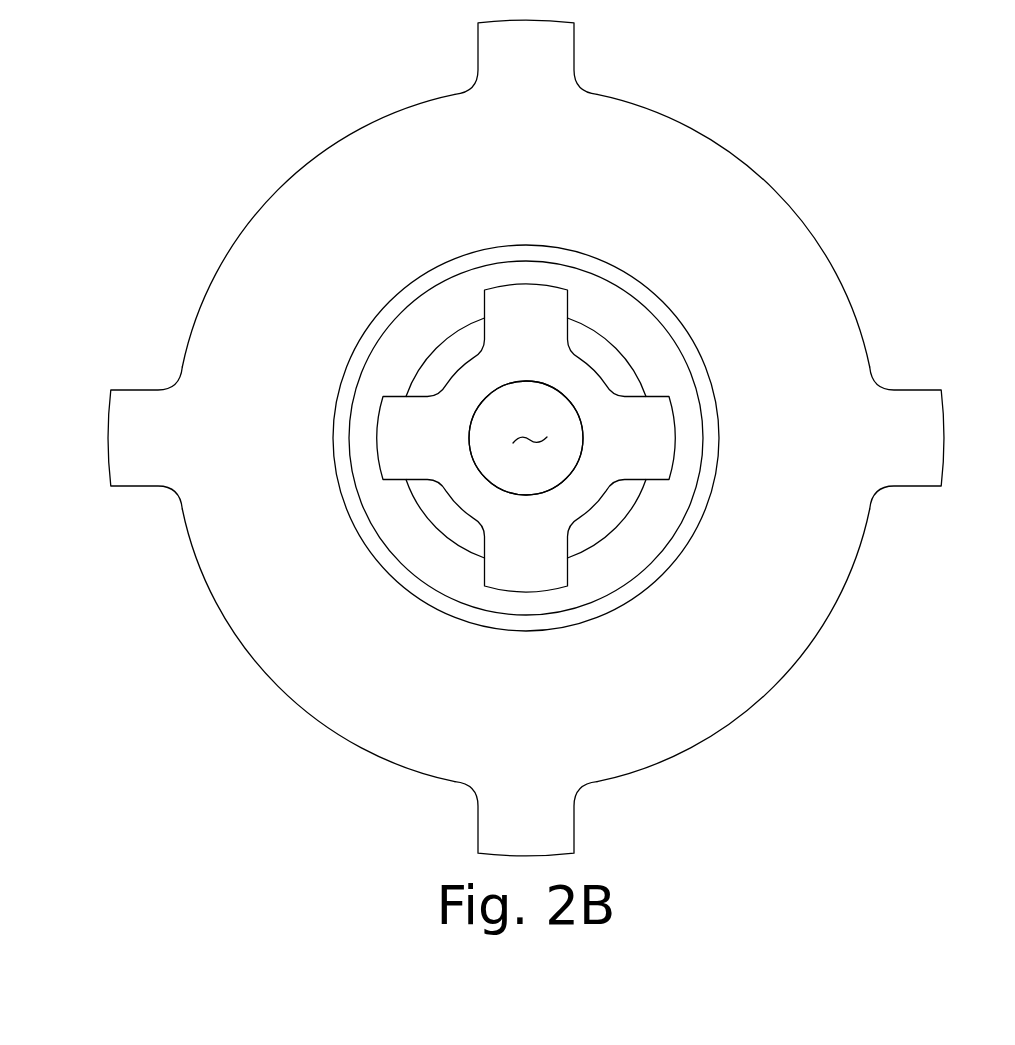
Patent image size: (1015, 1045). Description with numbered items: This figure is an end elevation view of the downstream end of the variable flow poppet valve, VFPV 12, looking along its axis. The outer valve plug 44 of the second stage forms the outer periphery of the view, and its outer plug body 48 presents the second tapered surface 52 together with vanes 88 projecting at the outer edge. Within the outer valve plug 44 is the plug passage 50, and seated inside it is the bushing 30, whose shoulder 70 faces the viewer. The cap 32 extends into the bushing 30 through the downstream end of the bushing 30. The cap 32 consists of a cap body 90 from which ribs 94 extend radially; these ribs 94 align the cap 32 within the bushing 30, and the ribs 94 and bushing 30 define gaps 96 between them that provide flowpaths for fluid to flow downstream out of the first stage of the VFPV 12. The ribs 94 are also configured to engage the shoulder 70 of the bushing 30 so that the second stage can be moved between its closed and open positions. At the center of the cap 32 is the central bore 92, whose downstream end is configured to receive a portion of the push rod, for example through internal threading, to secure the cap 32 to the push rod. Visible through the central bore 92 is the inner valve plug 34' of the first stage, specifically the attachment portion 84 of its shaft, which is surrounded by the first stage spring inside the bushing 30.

The variable flow poppet valve 12 is at (232, 131).
The outer valve plug 44 is at (330, 132).
The outer plug body 48 is at (676, 183).
The second tapered surface 52 is at (750, 312).
The vanes 88 is at (543, 45).
The plug passage 50 is at (596, 632).
The cap body 90 is at (529, 517).
The bushing 30 is at (607, 510).
The cap 32 is at (582, 508).
The ribs 94 is at (511, 300).
The gaps 96 is at (608, 363).
The shoulder 70 is at (633, 502).
The inner valve plug 34' is at (539, 548).
The central bore 92 is at (583, 425).
The attachment portion 84 is at (527, 443).